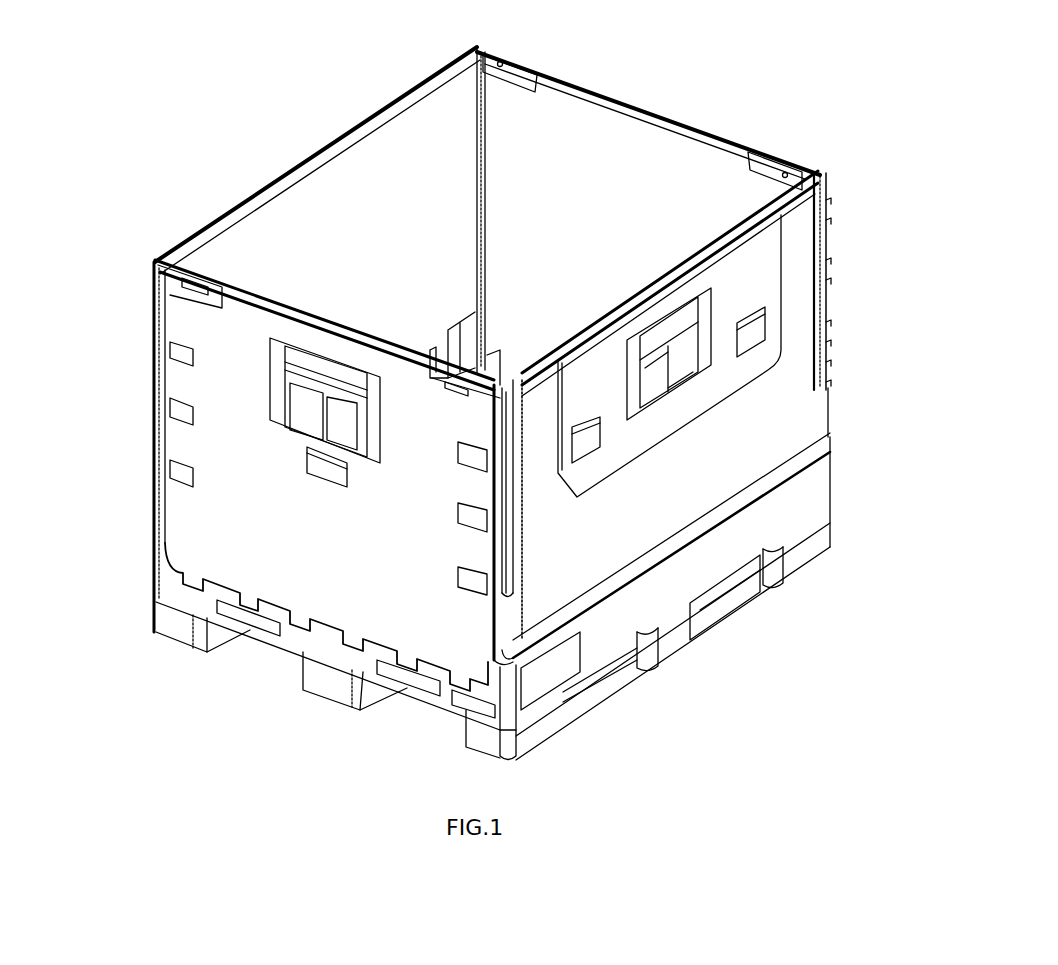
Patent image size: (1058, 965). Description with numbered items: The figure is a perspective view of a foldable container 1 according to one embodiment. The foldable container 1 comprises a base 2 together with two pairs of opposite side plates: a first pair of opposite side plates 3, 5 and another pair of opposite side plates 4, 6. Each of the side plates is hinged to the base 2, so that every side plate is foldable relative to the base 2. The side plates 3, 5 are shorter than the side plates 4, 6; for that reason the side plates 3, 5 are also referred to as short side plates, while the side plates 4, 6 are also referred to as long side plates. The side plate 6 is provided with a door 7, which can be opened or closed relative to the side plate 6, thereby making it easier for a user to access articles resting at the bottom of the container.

The foldable container 1 is at (363, 99).
The base 2 is at (803, 513).
The side plate 3 is at (650, 173).
The side plate 4 is at (323, 205).
The side plate 5 is at (222, 333).
The side plate 6 is at (807, 417).
The door 7 is at (767, 277).